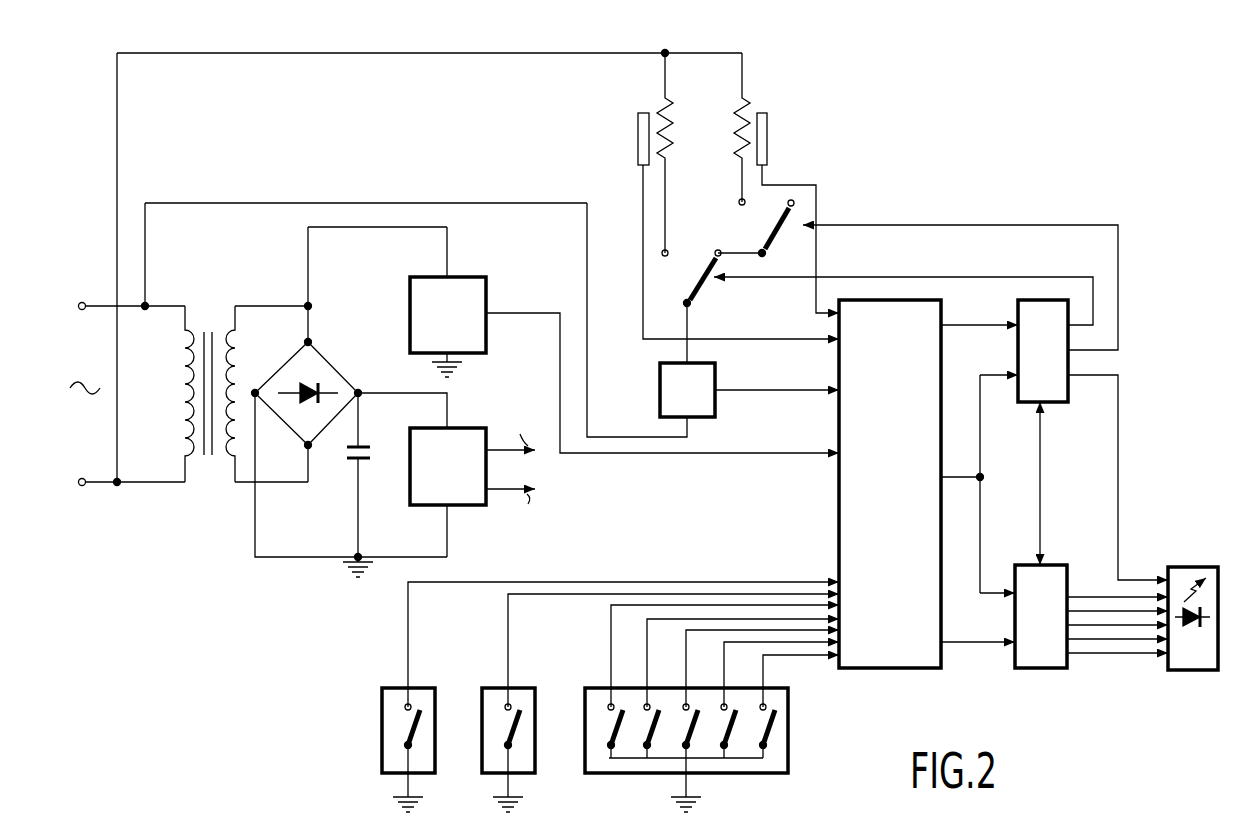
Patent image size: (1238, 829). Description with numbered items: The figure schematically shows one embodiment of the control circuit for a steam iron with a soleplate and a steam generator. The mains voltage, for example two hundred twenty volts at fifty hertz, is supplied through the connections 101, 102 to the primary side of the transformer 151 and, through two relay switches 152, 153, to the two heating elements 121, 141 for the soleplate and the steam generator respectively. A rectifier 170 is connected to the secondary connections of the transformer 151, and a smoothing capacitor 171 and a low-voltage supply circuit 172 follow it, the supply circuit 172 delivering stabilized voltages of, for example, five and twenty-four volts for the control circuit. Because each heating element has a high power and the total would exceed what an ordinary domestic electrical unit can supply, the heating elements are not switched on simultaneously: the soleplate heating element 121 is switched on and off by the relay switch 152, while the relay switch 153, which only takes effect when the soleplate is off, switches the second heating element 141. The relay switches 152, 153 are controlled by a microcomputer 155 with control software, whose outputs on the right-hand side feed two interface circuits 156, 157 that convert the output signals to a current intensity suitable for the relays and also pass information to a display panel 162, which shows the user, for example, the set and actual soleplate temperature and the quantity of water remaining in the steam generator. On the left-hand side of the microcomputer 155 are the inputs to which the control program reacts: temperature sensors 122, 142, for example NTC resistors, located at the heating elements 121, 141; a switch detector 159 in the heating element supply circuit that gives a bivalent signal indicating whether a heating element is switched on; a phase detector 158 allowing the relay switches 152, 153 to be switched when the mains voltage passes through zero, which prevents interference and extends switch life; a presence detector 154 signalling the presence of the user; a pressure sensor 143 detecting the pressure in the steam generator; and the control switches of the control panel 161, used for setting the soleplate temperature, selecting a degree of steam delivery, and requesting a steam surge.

The connection 101 is at (83, 304).
The connection 102 is at (80, 487).
The heating element 121 is at (672, 119).
The temperature sensor 122 is at (638, 137).
The heating element 141 is at (733, 142).
The temperature sensor 142 is at (768, 137).
The pressure sensor 143 is at (523, 688).
The transformer 151 is at (210, 487).
The relay switch 152 is at (697, 269).
The relay switch 153 is at (770, 224).
The presence detector 154 is at (420, 688).
The microcomputer 155 is at (894, 669).
The interface circuit 156 is at (1052, 402).
The interface circuit 157 is at (1047, 669).
The phase detector 158 is at (410, 320).
The switch detector 159 is at (715, 405).
The control panel 161 is at (790, 732).
The display panel 162 is at (1188, 567).
The rectifier 170 is at (301, 360).
The smoothing capacitor 171 is at (352, 456).
The low-voltage supply circuit 172 is at (410, 486).